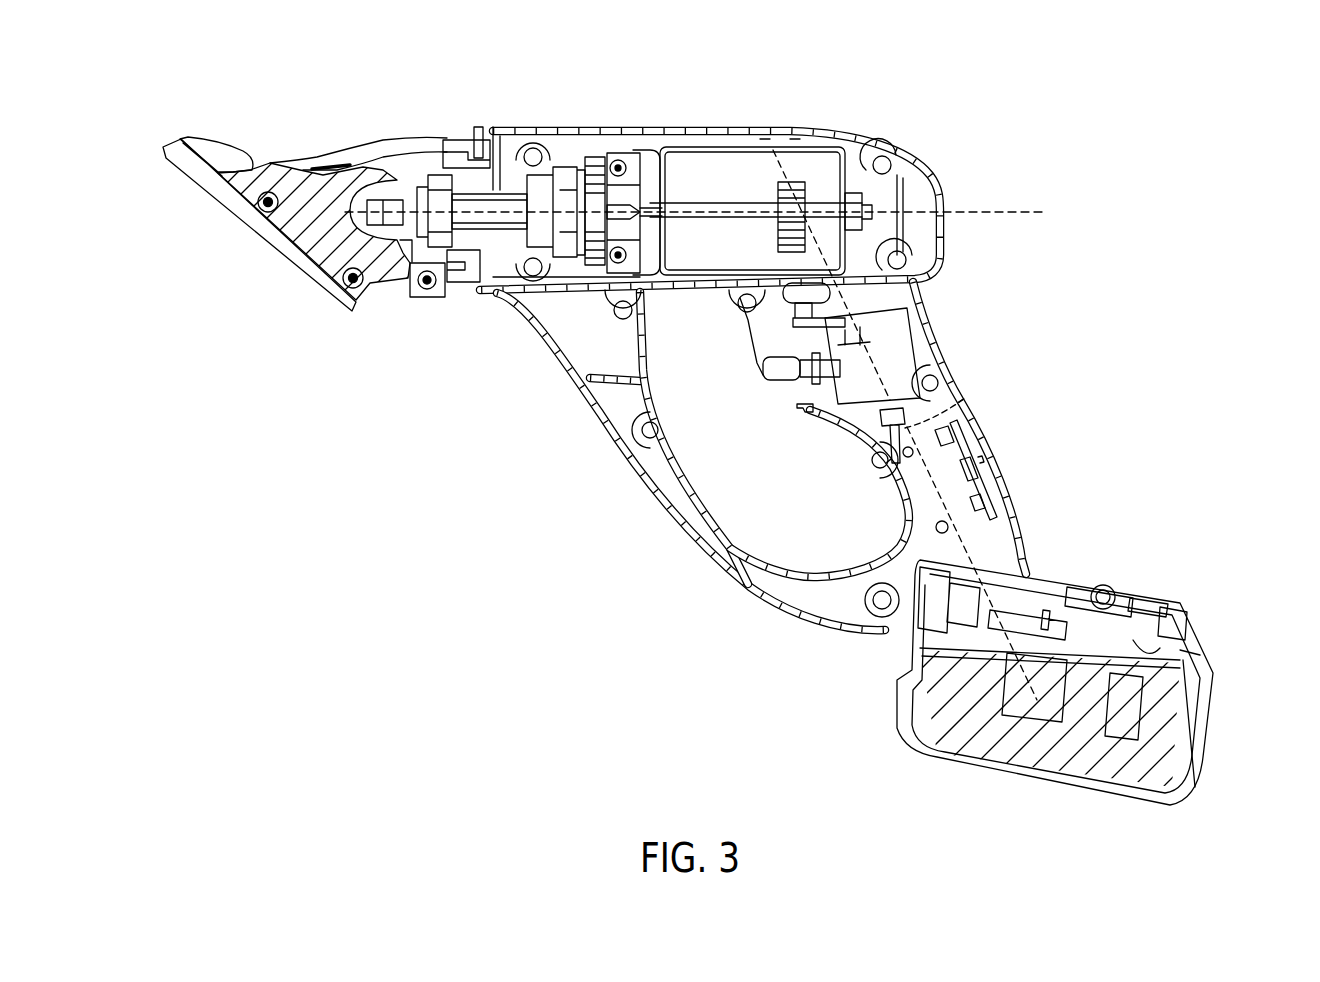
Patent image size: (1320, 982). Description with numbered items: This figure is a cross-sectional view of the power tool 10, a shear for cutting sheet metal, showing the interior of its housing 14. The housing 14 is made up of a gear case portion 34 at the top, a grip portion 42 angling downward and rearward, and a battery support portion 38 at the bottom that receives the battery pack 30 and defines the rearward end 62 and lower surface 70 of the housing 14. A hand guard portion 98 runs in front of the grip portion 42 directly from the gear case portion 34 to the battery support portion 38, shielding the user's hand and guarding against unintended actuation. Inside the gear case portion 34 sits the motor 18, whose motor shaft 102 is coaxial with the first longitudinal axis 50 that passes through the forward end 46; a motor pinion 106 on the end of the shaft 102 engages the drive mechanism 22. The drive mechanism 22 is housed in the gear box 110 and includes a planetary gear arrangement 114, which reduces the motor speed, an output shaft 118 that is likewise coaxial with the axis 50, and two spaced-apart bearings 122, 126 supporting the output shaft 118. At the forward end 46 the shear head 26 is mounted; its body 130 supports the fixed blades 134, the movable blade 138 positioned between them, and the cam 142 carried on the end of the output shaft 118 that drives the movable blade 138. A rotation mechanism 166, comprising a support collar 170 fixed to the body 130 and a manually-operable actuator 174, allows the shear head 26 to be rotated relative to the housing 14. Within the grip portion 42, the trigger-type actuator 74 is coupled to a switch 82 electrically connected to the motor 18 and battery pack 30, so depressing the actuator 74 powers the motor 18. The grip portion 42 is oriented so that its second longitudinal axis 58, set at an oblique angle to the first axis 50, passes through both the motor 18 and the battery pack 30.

The power tool 10 is at (940, 105).
The housing 14 is at (855, 140).
The motor 18 is at (700, 155).
The drive mechanism 22 is at (568, 145).
The shear head 26 is at (300, 160).
The battery pack 30 is at (1196, 735).
The gear case portion 34 is at (785, 130).
The battery support portion 38 is at (1104, 588).
The grip portion 42 is at (990, 440).
The forward end 46 is at (490, 293).
The first longitudinal axis 50 is at (1008, 208).
The second longitudinal axis 58 is at (958, 400).
The rearward end 62 is at (1140, 600).
The lower surface 70 is at (847, 635).
The actuator 74 is at (762, 376).
The switch 82 is at (905, 320).
The hand guard portion 98 is at (640, 487).
The motor shaft 102 is at (813, 205).
The motor pinion 106 is at (660, 182).
The gear box 110 is at (512, 278).
The planetary gear arrangement 114 is at (598, 165).
The output shaft 118 is at (498, 200).
The bearing 122 is at (541, 180).
The bearing 126 is at (440, 182).
The body 130 is at (368, 142).
The fixed blades 134 is at (215, 146).
The movable blade 138 is at (190, 172).
The cam 142 is at (405, 245).
The rotation mechanism 166 is at (480, 76).
The support collar 170 is at (449, 143).
The manually-operable actuator 174 is at (480, 125).